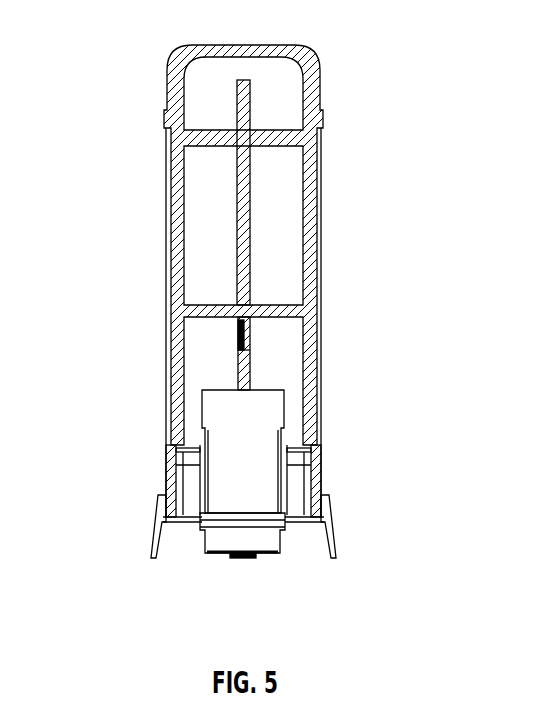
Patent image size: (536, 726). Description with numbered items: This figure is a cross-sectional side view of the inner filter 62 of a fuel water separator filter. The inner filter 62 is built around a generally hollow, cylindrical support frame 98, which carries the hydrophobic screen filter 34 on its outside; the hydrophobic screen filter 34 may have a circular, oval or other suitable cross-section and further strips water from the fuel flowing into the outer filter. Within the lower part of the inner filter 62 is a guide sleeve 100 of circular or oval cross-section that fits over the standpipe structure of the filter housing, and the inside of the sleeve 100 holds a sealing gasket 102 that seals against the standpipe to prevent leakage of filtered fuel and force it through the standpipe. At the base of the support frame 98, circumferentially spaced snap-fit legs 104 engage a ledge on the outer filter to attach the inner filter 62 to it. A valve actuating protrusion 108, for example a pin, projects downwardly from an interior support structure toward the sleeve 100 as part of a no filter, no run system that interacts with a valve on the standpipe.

The inner filter 62 is at (236, 331).
The support frame 98 is at (175, 200).
The hydrophobic screen filter 34 is at (321, 253).
The valve actuating protrusion 108 is at (247, 343).
The guide sleeve 100 is at (238, 439).
The snap-fit legs 104 is at (149, 530).
The sealing gasket 102 is at (230, 548).